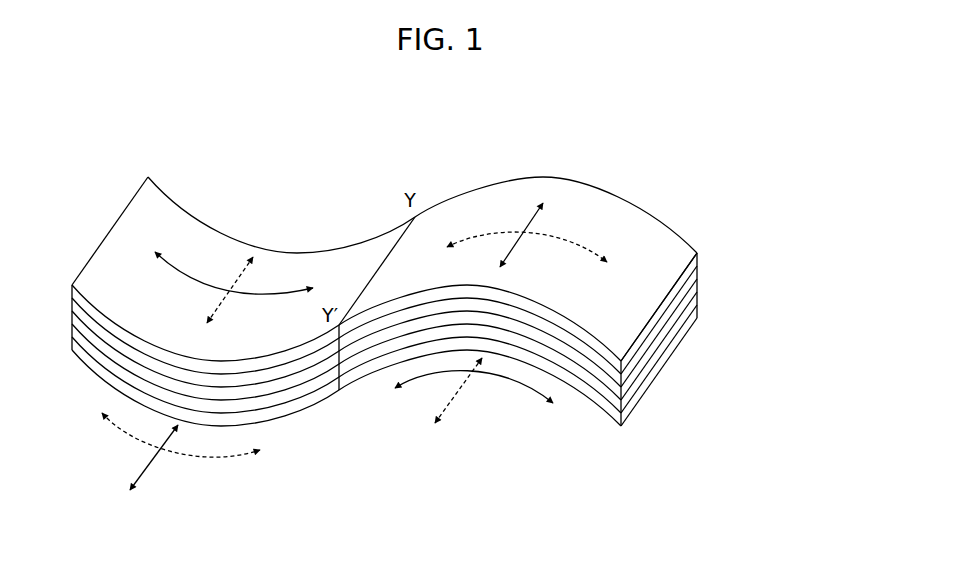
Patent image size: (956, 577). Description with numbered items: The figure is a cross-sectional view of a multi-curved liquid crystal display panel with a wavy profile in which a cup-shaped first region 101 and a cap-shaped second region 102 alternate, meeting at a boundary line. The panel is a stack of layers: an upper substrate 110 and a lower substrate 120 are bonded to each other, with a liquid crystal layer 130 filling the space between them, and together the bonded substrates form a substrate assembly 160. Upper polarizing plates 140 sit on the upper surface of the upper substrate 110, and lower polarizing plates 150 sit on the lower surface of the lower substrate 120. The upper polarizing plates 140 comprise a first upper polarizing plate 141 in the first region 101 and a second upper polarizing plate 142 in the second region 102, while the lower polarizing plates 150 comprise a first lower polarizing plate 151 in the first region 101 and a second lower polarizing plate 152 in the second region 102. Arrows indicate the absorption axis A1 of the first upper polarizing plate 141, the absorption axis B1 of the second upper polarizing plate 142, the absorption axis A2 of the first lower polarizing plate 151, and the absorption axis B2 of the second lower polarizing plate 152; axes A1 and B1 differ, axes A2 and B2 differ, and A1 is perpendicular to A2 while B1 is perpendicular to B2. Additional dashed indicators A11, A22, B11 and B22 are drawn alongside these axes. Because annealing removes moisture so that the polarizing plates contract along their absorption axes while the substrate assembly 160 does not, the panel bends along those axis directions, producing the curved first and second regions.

The first region 101 is at (162, 163).
The second region 102 is at (412, 152).
The upper substrate 110 is at (697, 265).
The lower substrate 120 is at (697, 297).
The liquid crystal layer 130 is at (697, 282).
The upper polarizing plates 140 is at (697, 253).
The first upper polarizing plate 141 is at (148, 177).
The second upper polarizing plate 142 is at (697, 252).
The lower polarizing plates 150 is at (697, 315).
The first lower polarizing plate 151 is at (73, 352).
The second lower polarizing plate 152 is at (607, 412).
The substrate assembly 160 is at (453, 330).
The absorption axis of the first upper polarizing plate A1 is at (234, 259).
The first bending axis direction A11 is at (234, 298).
The absorption axis of the first lower polarizing plate A2 is at (169, 457).
The second bending axis direction A22 is at (194, 447).
The absorption axis of the second upper polarizing plate B1 is at (541, 232).
The third bending axis direction B11 is at (535, 259).
The absorption axis of the second lower polarizing plate B2 is at (472, 394).
The fourth bending axis direction B22 is at (458, 402).